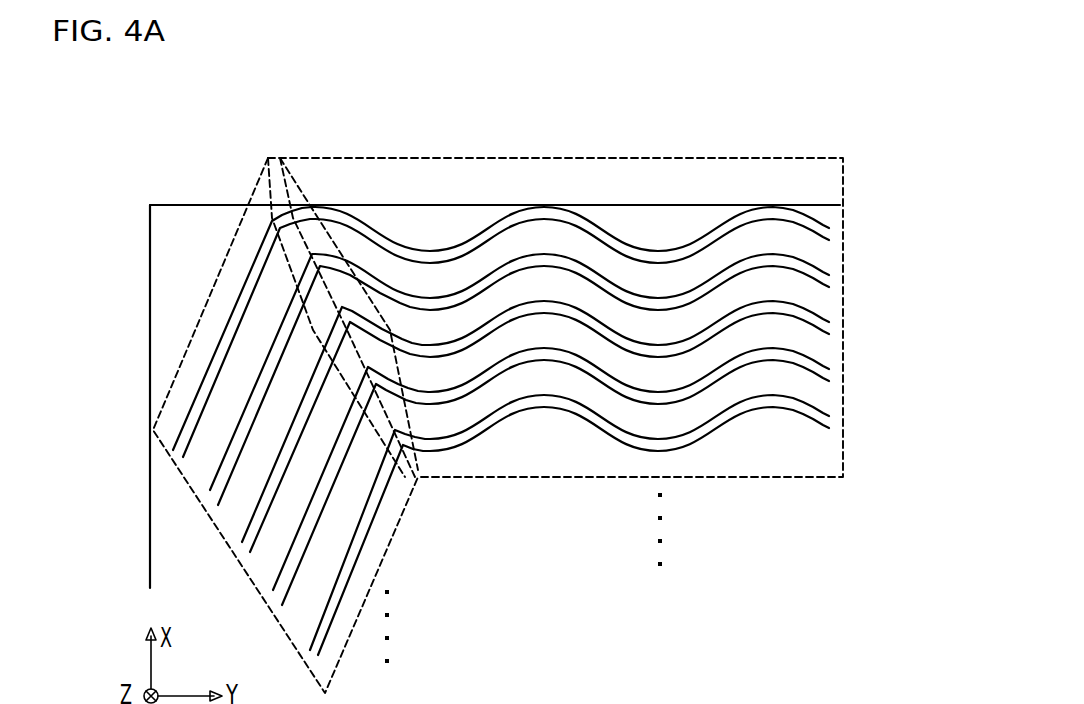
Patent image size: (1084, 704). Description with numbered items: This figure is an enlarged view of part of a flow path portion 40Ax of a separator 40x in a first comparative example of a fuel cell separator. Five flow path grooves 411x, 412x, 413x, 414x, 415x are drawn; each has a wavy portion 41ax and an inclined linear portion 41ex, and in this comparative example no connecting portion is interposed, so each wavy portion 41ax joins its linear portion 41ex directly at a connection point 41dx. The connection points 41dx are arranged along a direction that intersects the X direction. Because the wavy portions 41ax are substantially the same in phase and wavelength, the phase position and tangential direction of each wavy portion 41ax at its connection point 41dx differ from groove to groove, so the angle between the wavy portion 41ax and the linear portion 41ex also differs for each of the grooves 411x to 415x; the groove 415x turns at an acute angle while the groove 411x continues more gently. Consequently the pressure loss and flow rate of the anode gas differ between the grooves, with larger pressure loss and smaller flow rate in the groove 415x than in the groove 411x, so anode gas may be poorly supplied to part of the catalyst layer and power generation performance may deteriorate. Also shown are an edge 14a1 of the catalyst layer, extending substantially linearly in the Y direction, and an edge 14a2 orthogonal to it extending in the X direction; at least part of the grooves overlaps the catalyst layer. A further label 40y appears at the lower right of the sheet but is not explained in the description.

The separator 40x is at (863, 105).
The flow path portion 40Ax is at (885, 158).
The sensor unit (second) 40y is at (876, 703).
The wavy portion 41ax is at (577, 157).
The connection point 41dx is at (300, 179).
The linear portion 41ex is at (207, 300).
The edge of the catalyst layer 14a1 is at (840, 205).
The edge of the catalyst layer 14a2 is at (150, 557).
The groove 411x is at (830, 214).
The groove 412x is at (830, 260).
The groove 413x is at (830, 307).
The groove 414x is at (830, 353).
The groove 415x is at (830, 400).